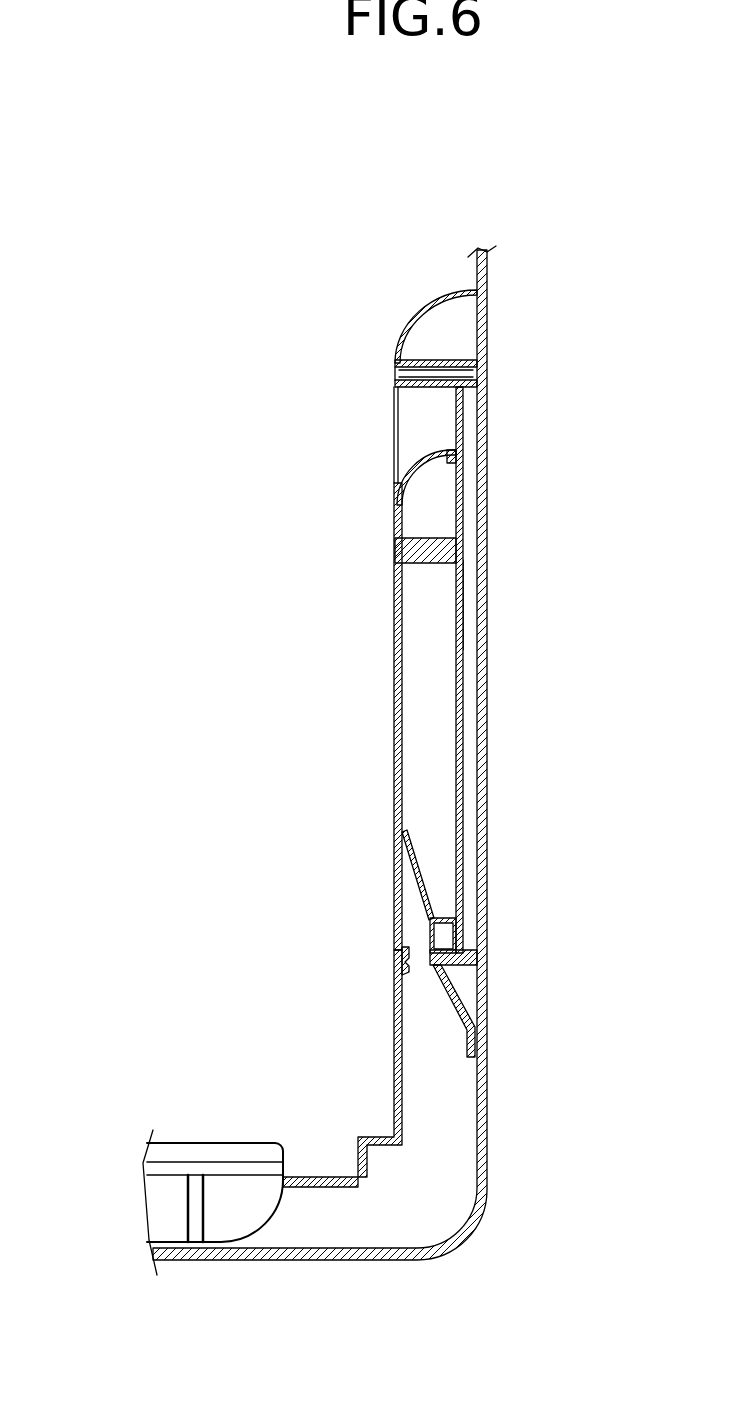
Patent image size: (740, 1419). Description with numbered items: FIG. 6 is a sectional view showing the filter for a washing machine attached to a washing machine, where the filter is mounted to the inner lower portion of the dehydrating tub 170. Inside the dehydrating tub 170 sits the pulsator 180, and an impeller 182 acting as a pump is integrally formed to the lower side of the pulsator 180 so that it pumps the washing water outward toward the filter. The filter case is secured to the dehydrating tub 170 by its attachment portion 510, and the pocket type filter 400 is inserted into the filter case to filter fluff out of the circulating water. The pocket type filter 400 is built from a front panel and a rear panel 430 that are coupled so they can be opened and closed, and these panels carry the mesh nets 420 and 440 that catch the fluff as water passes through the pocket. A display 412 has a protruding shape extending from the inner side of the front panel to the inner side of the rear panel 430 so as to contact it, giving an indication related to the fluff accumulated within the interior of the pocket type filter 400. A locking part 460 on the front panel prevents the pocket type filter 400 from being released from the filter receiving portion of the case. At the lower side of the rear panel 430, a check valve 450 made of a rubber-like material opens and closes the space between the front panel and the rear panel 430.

The dehydrating tub 170 is at (480, 830).
The pulsator 180 is at (193, 1157).
The impeller 182 is at (200, 1227).
The pocket type filter 400 is at (345, 600).
The display 412 is at (413, 530).
The mesh net 420 is at (395, 738).
The rear panel 430 is at (463, 463).
The mesh net 440 is at (464, 606).
The check valve 450 is at (395, 888).
The locking part 460 is at (440, 357).
The attachment portion 510 is at (393, 1067).